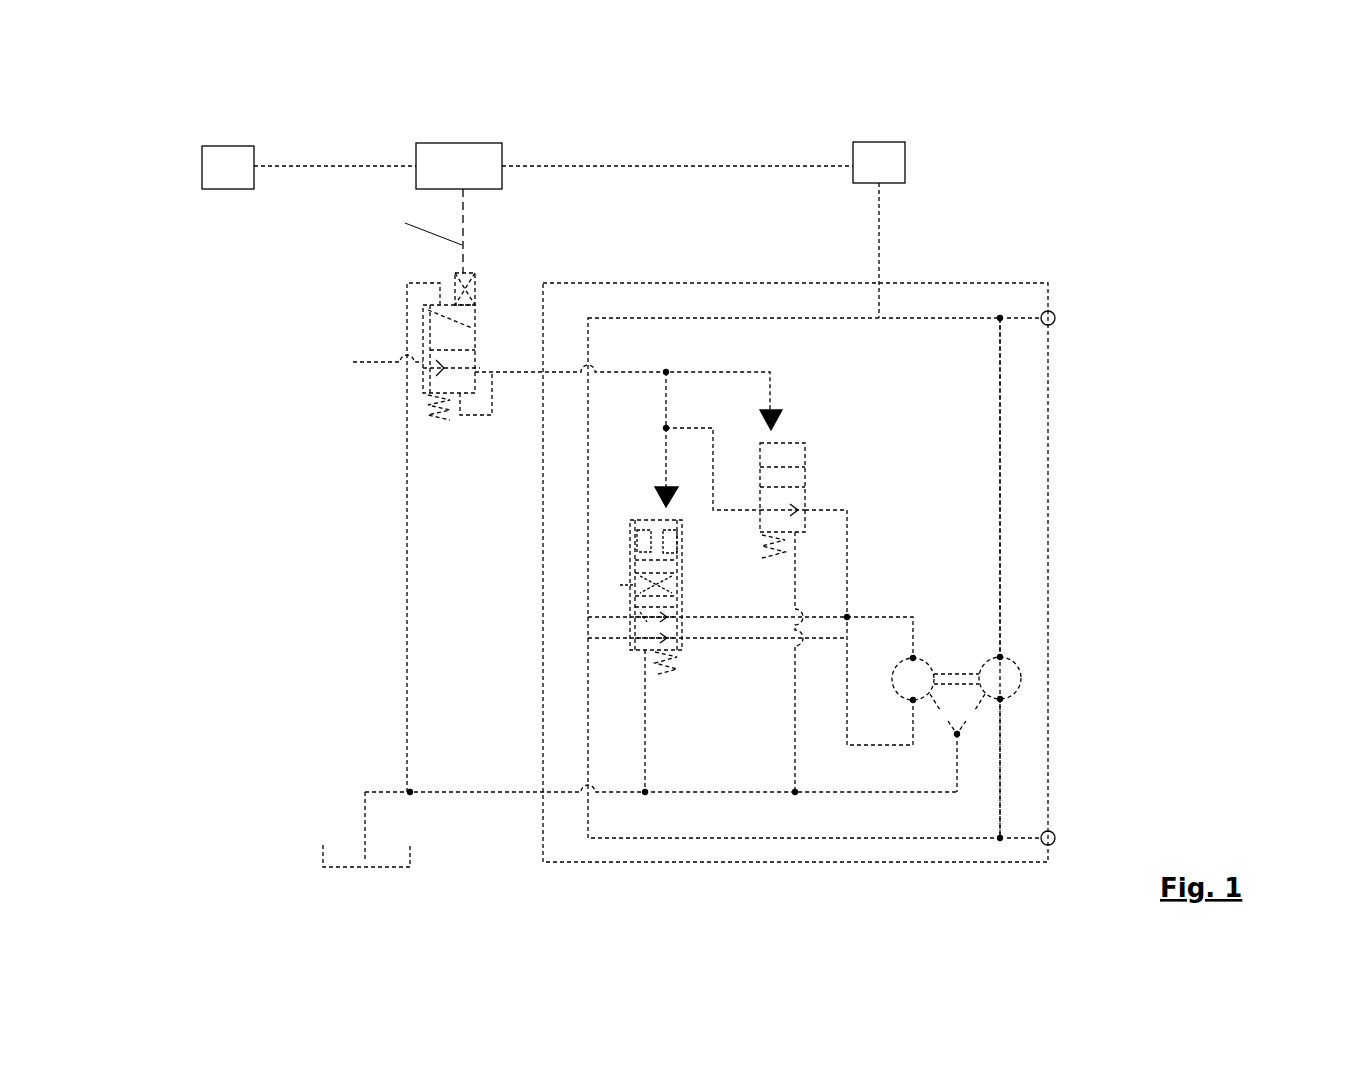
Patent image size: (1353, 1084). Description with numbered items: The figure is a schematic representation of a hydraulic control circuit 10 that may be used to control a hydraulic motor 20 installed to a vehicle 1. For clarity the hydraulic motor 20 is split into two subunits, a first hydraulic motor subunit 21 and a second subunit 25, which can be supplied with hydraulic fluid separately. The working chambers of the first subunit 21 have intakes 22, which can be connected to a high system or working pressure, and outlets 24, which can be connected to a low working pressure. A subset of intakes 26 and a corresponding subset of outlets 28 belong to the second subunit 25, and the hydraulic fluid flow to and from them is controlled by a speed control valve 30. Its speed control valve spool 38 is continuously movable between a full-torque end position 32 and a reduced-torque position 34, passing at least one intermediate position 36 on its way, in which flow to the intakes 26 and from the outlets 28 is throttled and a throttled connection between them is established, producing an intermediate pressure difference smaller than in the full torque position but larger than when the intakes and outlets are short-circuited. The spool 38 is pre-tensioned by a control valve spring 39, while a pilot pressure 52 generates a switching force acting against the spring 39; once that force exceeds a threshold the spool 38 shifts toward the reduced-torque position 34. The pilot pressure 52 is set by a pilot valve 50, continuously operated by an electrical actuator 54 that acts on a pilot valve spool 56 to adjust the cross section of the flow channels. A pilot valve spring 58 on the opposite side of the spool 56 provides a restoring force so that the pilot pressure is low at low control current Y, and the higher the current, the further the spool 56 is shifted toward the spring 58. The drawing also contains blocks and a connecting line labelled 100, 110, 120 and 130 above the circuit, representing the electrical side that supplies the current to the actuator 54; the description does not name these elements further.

The vehicle 1 is at (176, 270).
The hydraulic control circuit 10 is at (1185, 161).
The hydraulic motor 20 is at (1077, 626).
The first hydraulic motor subunit 21 is at (1003, 678).
The intakes 22 is at (1000, 698).
The outlets 24 is at (1000, 659).
The second subunit 25 is at (915, 678).
The subset of intakes 26 is at (915, 700).
The subset of outlets 28 is at (913, 658).
The speed control valve 30 is at (680, 725).
The full-torque end position 32 is at (638, 638).
The reduced-torque position 34 is at (640, 540).
The intermediate position 36 is at (635, 583).
The speed control valve spool 38 is at (657, 625).
The control valve spring 39 is at (663, 678).
The pilot valve 50 is at (541, 333).
The pilot pressure 52 is at (627, 371).
The electrical actuator 54 is at (473, 278).
The pilot valve spool 56 is at (458, 323).
The pilot valve spring 58 is at (475, 415).
The control unit 100 is at (458, 165).
The input device 110 is at (227, 168).
The signal line 120 is at (648, 160).
The sensor 130 is at (873, 158).